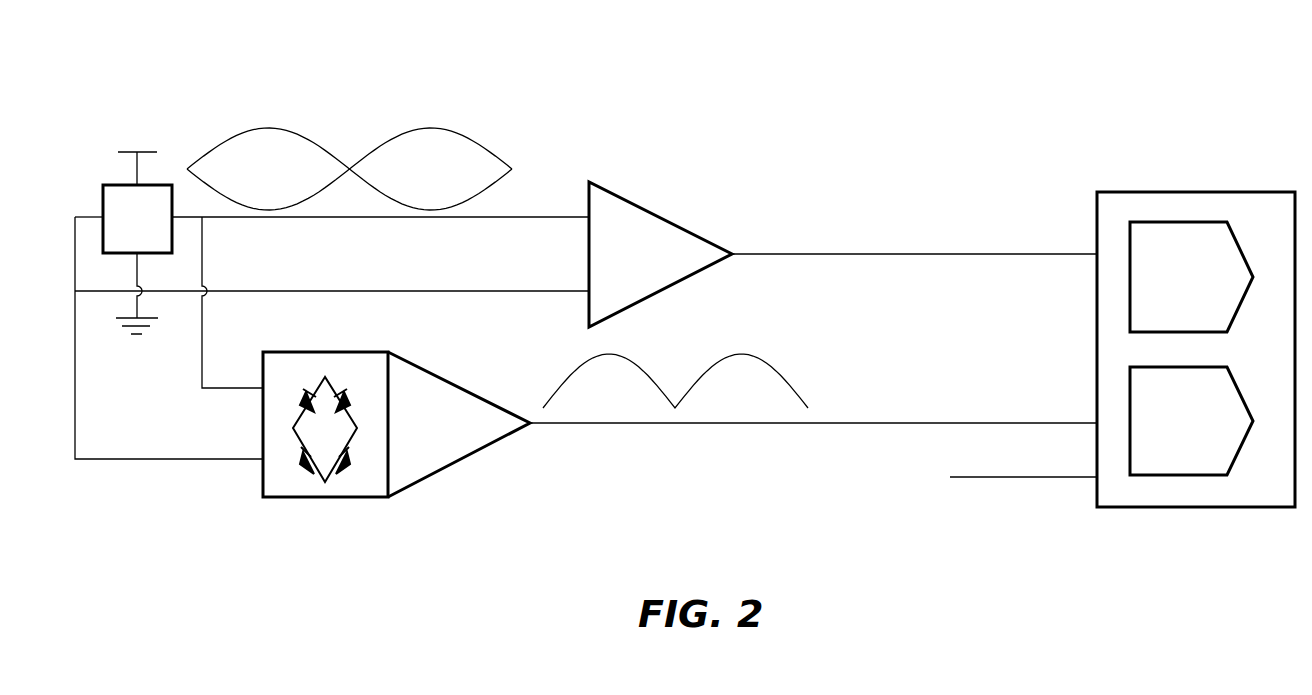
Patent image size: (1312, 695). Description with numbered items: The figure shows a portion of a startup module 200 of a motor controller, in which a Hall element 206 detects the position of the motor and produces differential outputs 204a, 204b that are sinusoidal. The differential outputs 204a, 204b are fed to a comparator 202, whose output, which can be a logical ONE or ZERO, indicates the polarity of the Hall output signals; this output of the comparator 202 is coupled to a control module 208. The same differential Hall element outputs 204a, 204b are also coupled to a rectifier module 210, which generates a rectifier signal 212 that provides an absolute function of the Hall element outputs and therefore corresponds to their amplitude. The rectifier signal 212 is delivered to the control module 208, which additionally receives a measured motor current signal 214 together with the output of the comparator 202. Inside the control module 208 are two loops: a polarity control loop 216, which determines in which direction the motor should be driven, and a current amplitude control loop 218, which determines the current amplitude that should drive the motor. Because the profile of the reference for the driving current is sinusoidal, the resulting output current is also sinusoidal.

The startup module 200 is at (893, 70).
The comparator 202 is at (660, 254).
The differential output 204a is at (453, 217).
The differential output 204b is at (457, 291).
The Hall element 206 is at (103, 188).
The control module 208 is at (1192, 192).
The rectifier module 210 is at (396, 424).
The rectifier signal 212 is at (910, 423).
The measured motor current signal 214 is at (1023, 477).
The polarity control loop 216 is at (1191, 277).
The current amplitude control loop 218 is at (1191, 421).